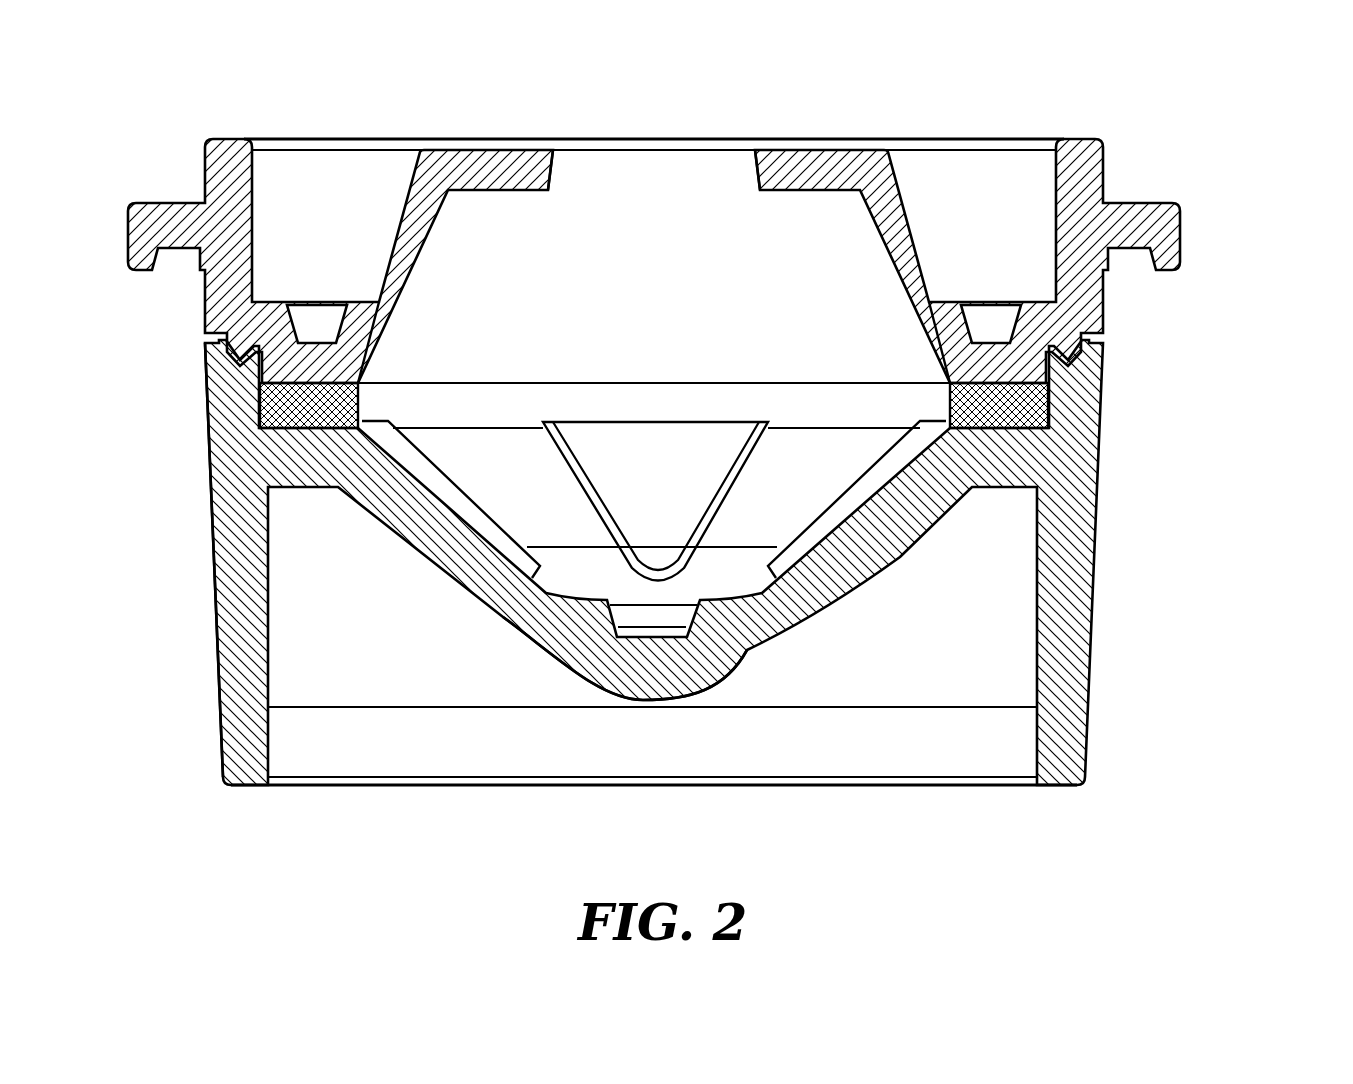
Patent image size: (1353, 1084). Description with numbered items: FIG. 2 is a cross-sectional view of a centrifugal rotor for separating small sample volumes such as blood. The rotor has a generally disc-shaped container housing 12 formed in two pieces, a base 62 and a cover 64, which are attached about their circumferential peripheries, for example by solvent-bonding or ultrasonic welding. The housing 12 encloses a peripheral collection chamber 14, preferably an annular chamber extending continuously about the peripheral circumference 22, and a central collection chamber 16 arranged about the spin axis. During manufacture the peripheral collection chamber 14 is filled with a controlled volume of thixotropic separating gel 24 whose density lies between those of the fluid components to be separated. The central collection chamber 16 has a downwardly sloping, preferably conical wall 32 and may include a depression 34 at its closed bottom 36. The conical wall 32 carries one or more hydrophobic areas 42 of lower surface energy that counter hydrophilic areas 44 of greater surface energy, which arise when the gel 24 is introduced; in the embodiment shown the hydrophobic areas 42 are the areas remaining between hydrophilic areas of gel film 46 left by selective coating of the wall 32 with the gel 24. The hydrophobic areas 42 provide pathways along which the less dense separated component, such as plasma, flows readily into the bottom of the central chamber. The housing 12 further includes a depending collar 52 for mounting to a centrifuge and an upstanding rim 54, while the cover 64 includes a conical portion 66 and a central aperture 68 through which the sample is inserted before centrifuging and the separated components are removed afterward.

The container housing 12 is at (1237, 140).
The peripheral collection chamber 14 is at (260, 407).
The central collection chamber 16 is at (570, 563).
The peripheral circumference 22 is at (1103, 467).
The thixotropic separating gel 24 is at (1035, 412).
The downwardly sloping conical wall 32 is at (780, 510).
The depression 34 is at (690, 613).
The closed bottom 36 is at (650, 702).
The hydrophobic area 42 is at (515, 486).
The hydrophilic area 44 is at (669, 486).
The gel film 46 is at (872, 470).
The depending collar 52 is at (237, 693).
The upstanding rim 54 is at (205, 150).
The base 62 is at (225, 762).
The cover 64 is at (1108, 184).
The conical portion 66 is at (908, 195).
The central aperture 68 is at (693, 172).